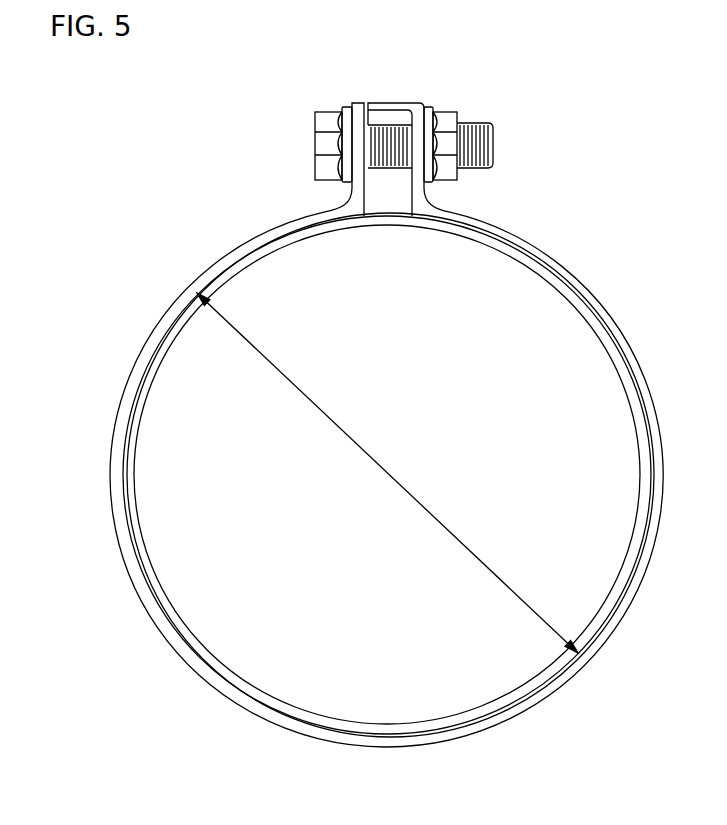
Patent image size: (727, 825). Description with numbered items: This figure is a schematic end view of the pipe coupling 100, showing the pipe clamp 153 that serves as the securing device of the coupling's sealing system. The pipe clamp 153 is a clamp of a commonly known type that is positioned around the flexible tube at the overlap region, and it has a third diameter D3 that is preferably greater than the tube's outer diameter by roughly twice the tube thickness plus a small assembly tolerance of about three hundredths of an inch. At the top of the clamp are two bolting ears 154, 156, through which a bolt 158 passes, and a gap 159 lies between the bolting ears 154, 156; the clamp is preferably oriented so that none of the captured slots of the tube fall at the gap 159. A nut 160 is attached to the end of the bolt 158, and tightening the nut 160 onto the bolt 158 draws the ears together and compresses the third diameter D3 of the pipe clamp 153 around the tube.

The pipe coupling 100 is at (339, 380).
The pipe clamp 153 is at (524, 238).
The bolting ear 154 is at (363, 125).
The bolting ear 156 is at (400, 103).
The bolt 158 is at (338, 143).
The gap 159 is at (389, 194).
The nut 160 is at (450, 123).
The third diameter D3 is at (386, 470).